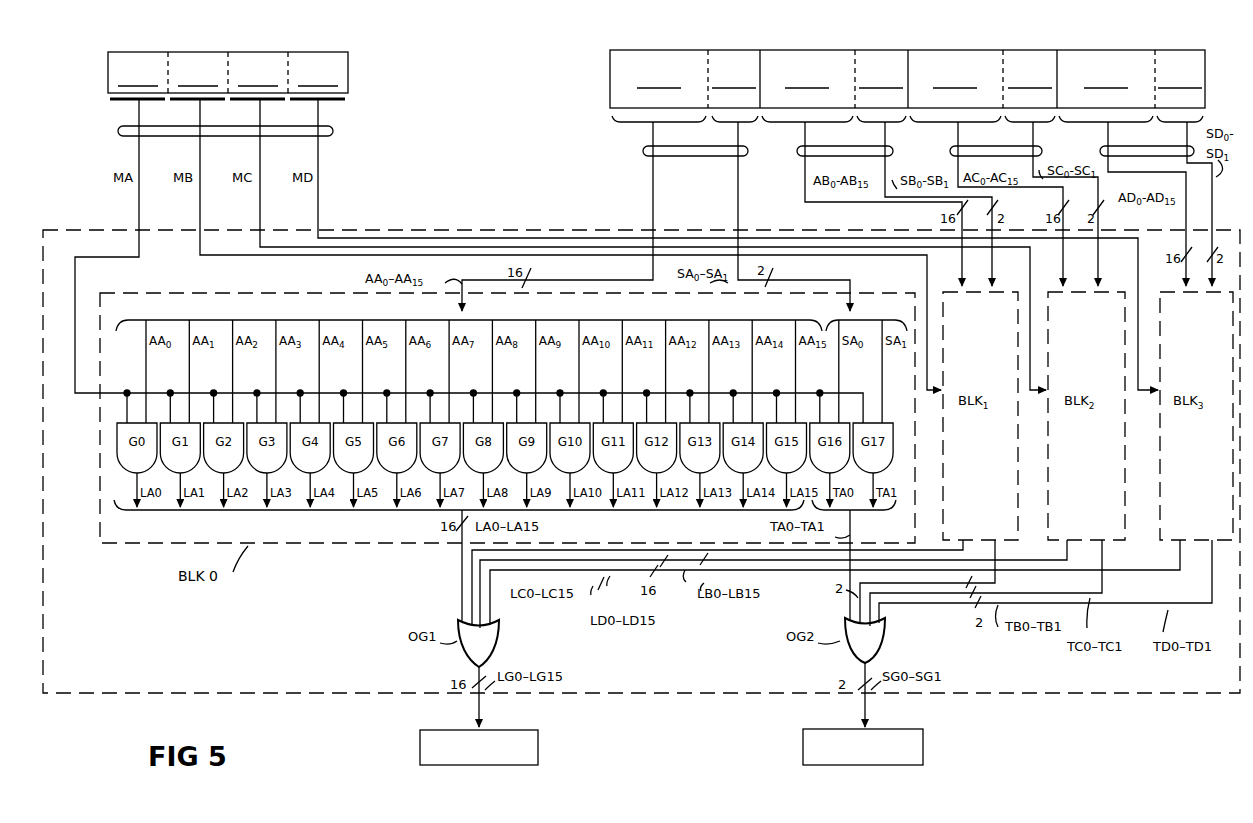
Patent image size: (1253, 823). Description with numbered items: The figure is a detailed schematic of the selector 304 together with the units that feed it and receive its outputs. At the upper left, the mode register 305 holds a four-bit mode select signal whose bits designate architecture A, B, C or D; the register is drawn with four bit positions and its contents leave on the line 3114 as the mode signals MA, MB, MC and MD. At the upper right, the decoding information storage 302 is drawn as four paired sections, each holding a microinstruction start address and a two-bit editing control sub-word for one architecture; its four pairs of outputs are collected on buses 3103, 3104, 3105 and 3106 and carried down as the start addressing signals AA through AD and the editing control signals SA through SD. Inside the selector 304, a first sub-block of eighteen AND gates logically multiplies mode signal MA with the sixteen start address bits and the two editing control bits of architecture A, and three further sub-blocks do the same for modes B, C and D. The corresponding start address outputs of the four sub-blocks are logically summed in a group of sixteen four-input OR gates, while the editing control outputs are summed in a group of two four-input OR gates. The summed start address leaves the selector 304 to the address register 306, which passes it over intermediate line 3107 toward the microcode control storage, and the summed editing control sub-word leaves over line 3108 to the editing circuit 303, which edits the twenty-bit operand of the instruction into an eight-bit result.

The mode register 305 is at (305, 53).
The line 3114 is at (333, 131).
The decoding information storage 302 is at (1121, 52).
The storage output bus (302a) 3103 is at (657, 148).
The storage output bus (302b) 3104 is at (819, 148).
The storage output bus (302c) 3105 is at (969, 148).
The storage output bus (302d) 3106 is at (1117, 148).
The selector 304 is at (381, 232).
The intermediate line 3107 is at (482, 722).
The address register 306 is at (539, 759).
The selector output line to editing circuit 3108 is at (866, 722).
The editing circuit 303 is at (926, 763).